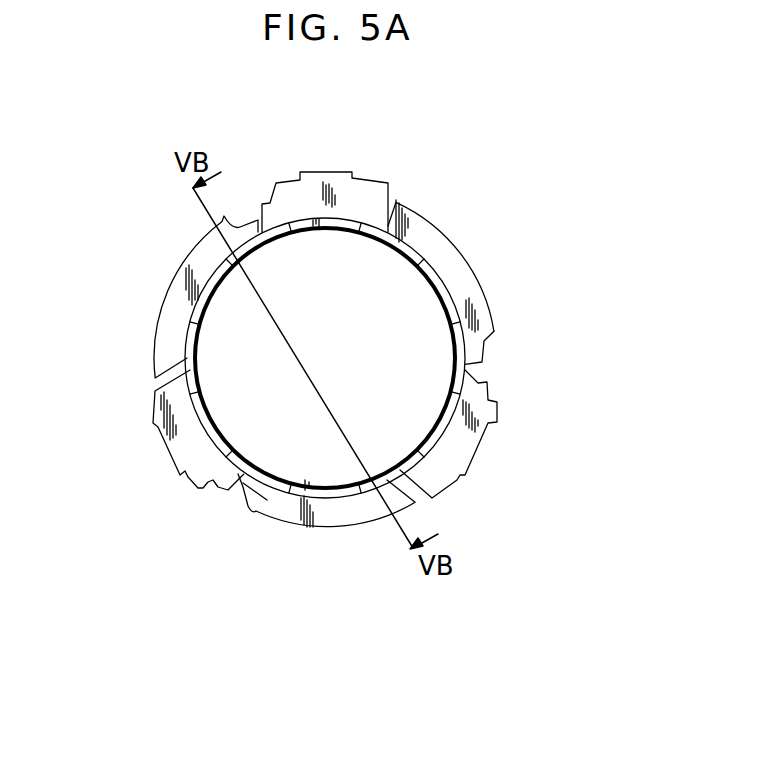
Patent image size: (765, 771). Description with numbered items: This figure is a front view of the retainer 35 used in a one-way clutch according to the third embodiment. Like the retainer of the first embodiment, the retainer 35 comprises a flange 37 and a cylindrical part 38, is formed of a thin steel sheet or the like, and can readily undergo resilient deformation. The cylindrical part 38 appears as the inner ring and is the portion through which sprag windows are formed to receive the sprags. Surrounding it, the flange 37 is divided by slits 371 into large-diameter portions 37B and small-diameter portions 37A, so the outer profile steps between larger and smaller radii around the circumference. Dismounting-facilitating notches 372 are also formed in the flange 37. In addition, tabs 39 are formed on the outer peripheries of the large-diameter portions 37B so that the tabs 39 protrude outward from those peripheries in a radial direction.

The retainer 35 is at (441, 153).
The flange 37 is at (477, 263).
The slit 371 is at (186, 358).
The dismounting-facilitating notch 372 is at (487, 367).
The small-diameter portion 37A is at (326, 516).
The large-diameter portion 37B is at (432, 477).
The cylindrical part 38 is at (443, 428).
The tab 39 is at (318, 186).